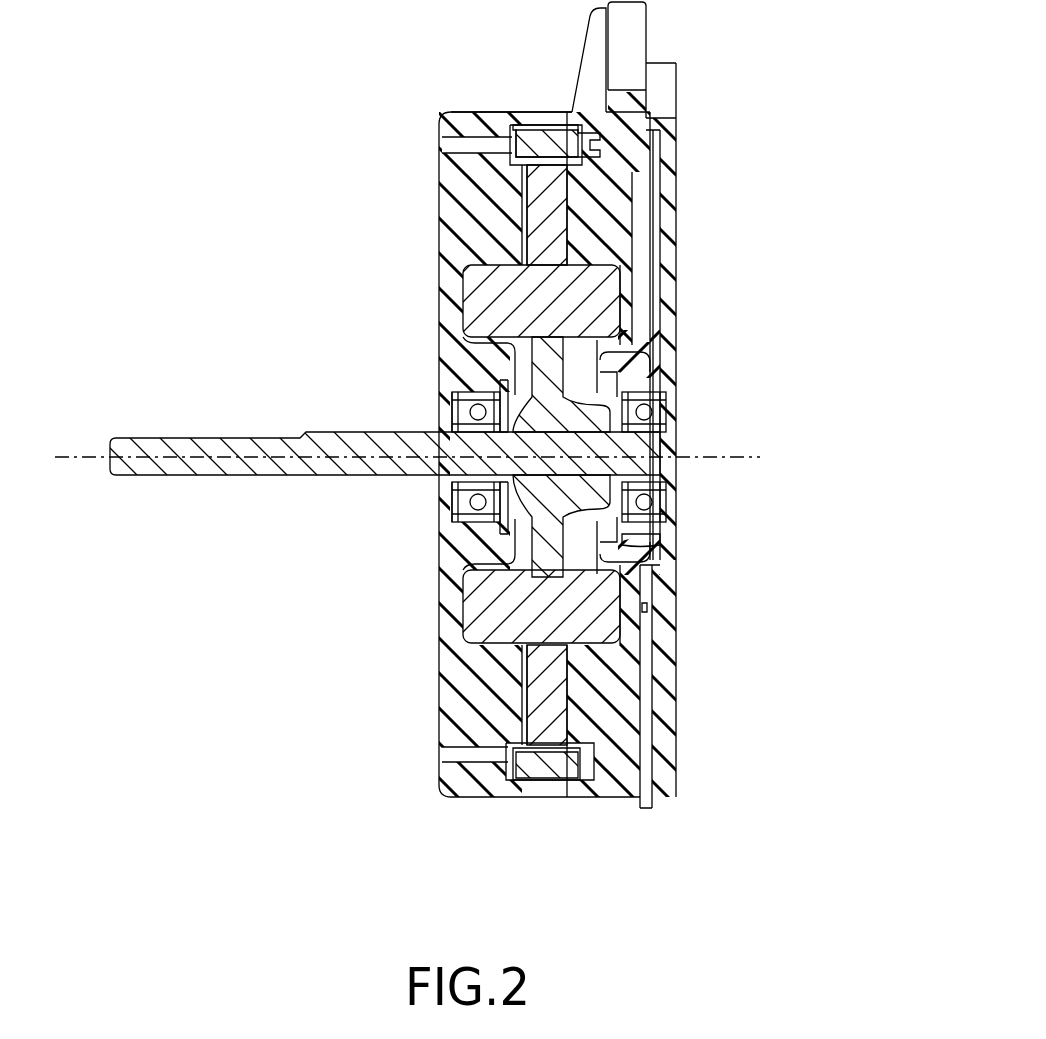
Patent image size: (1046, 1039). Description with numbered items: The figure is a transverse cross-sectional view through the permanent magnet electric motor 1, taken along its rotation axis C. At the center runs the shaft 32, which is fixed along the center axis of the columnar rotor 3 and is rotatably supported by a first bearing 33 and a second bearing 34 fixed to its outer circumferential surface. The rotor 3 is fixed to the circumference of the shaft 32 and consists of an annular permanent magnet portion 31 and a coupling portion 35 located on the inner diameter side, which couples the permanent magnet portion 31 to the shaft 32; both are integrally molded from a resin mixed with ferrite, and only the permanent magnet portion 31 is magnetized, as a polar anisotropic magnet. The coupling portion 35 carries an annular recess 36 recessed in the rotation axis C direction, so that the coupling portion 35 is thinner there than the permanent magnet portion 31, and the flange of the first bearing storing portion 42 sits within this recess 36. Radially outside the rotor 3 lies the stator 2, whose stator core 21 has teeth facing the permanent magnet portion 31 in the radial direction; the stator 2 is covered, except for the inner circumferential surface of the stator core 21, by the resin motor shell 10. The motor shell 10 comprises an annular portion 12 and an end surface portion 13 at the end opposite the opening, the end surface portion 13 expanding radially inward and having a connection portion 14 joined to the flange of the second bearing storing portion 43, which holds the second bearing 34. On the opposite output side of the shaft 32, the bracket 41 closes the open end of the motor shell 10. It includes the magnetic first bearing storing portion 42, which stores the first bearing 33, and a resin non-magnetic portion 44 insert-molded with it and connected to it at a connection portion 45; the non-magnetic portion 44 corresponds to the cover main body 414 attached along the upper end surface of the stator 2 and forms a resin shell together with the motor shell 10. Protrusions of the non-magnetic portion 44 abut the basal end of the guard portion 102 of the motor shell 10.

The electric motor 1 is at (398, 152).
The motor shell 10 is at (522, 106).
The guard portion 102 is at (647, 33).
The annular portion 12 is at (470, 695).
The end surface portion 13 is at (450, 598).
The connection portion 14 is at (445, 548).
The stator 2 is at (556, 500).
The stator core 21 is at (548, 735).
The rotor 3 is at (586, 345).
The permanent magnet portion 31 is at (585, 298).
The shaft 32 is at (225, 438).
The first bearing 33 is at (672, 415).
The second bearing 34 is at (440, 500).
The coupling portion 35 is at (672, 550).
The recess 36 is at (672, 530).
The bracket 41 is at (771, 435).
The first bearing storing portion 42 is at (672, 512).
The second bearing storing portion 43 is at (440, 385).
The non-magnetic portion 44 is at (771, 435).
The connection portion 45 is at (652, 368).
The cover main body 414 is at (676, 722).
The rotation axis C is at (392, 458).